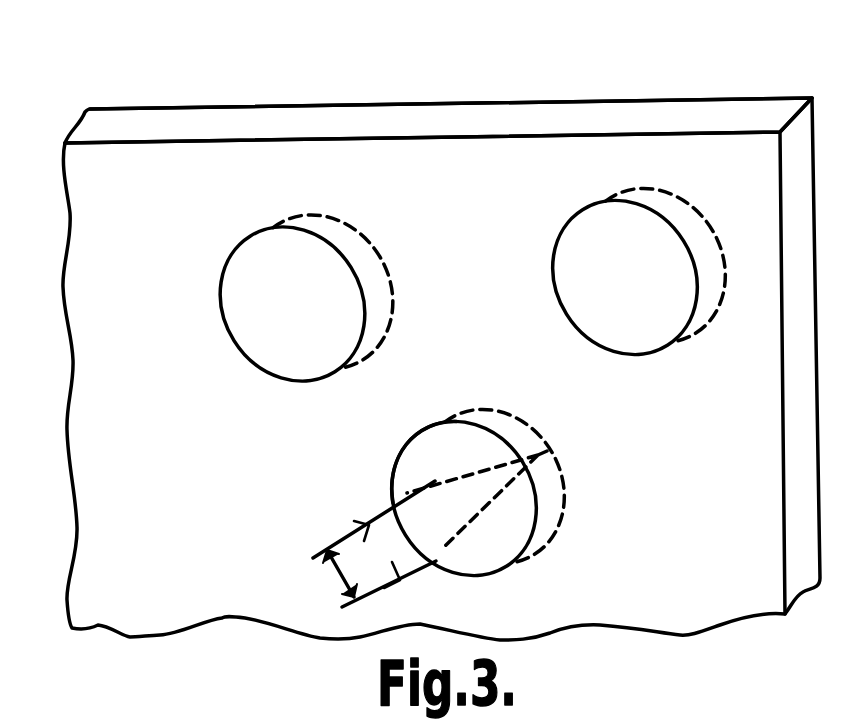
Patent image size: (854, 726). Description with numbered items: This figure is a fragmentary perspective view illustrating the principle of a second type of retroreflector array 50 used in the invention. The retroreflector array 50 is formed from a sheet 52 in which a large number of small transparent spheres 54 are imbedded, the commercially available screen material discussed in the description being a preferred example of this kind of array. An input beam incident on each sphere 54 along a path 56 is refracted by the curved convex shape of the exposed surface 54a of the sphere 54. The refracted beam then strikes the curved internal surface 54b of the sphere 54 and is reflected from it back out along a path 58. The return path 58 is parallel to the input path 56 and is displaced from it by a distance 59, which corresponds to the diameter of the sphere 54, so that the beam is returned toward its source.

The retroreflector array 50 is at (432, 99).
The sheet 52 is at (643, 114).
The transparent spheres 54 is at (246, 250).
The exposed surface 54a is at (420, 456).
The curved internal surface 54b is at (555, 450).
The path 56 is at (343, 546).
The path 58 is at (373, 593).
The distance 59 is at (336, 570).